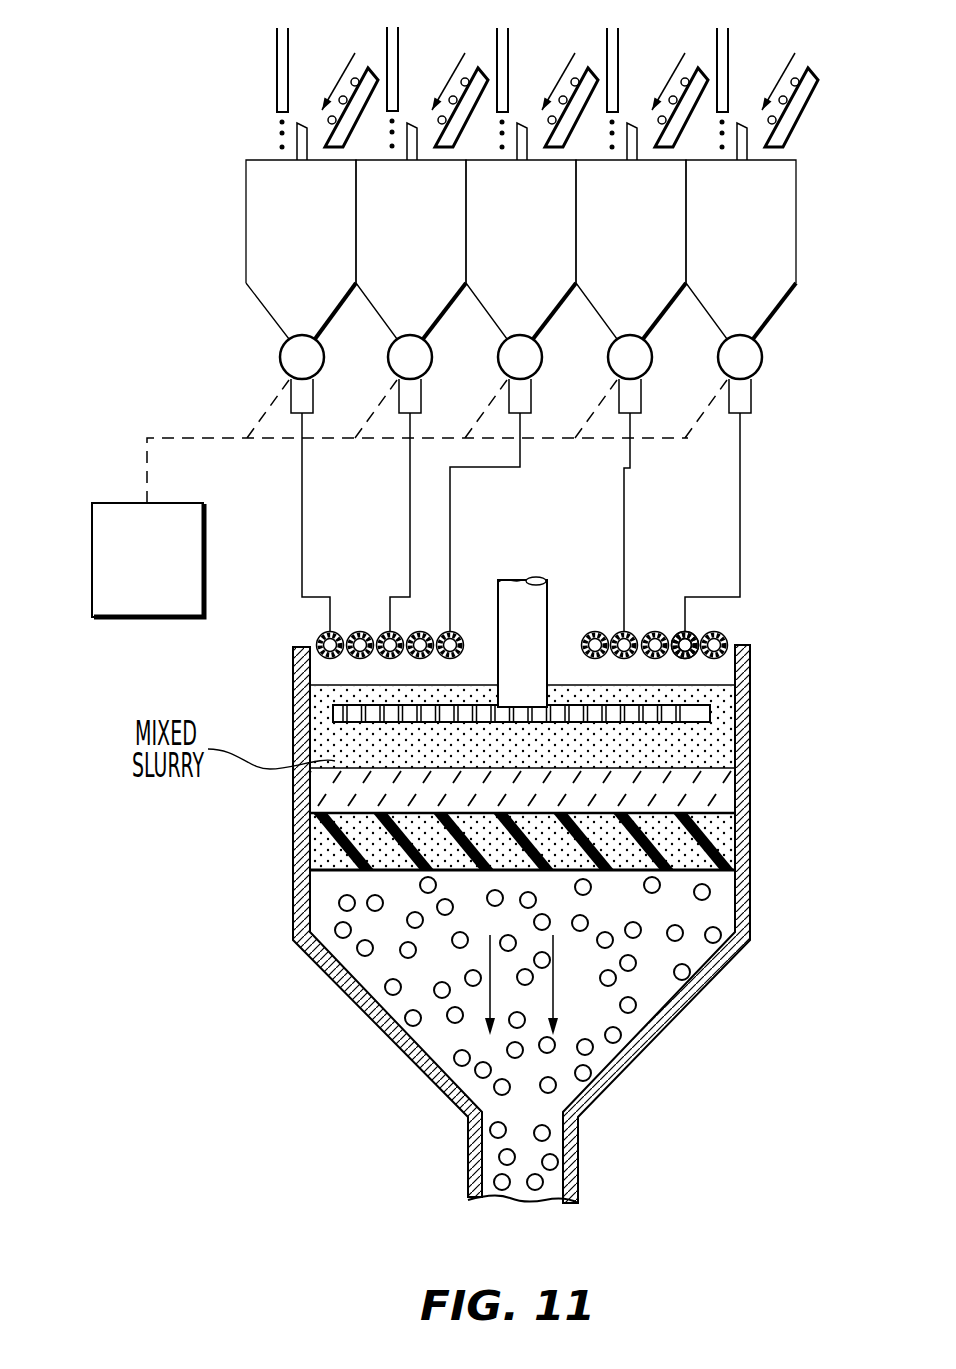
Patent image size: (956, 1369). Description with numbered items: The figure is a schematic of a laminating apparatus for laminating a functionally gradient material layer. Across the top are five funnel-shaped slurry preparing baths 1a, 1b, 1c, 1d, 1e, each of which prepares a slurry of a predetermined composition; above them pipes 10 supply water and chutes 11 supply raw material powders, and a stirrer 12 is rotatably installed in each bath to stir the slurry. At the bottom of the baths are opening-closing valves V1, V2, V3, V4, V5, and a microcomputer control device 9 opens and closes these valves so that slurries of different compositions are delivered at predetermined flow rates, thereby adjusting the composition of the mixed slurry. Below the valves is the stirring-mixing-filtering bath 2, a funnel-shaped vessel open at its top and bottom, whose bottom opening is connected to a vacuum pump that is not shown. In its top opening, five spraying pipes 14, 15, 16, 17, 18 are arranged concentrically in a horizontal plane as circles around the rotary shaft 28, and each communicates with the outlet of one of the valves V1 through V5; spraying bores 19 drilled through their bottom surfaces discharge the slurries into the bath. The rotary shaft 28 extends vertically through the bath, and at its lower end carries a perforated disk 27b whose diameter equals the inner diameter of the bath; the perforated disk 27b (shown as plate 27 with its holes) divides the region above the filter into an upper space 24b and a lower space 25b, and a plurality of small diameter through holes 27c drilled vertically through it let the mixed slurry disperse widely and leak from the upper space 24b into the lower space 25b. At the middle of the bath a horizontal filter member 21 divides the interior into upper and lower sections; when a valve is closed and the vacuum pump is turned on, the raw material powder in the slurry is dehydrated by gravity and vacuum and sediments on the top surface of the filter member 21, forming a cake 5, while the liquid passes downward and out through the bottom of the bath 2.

The pipe 10 is at (278, 68).
The chute 11 is at (376, 78).
The stirrer 12 is at (633, 127).
The slurry preparing bath 1a is at (321, 254).
The slurry preparing bath 1b is at (429, 254).
The slurry preparing bath 1c is at (537, 254).
The slurry preparing bath 1d is at (649, 254).
The slurry preparing bath 1e is at (757, 254).
The opening-closing valve V1 is at (292, 357).
The opening-closing valve V2 is at (402, 357).
The opening-closing valve V3 is at (512, 357).
The opening-closing valve V4 is at (622, 357).
The opening-closing valve V5 is at (732, 357).
The microcomputer control device 9 is at (155, 571).
The spraying pipe 14 is at (320, 633).
The spraying pipe 16 is at (390, 632).
The spraying bore 19 is at (422, 632).
The spraying pipe 18 is at (456, 632).
The spraying pipe 17 is at (598, 632).
The spraying pipe 15 is at (684, 632).
The rotary shaft 28 is at (514, 584).
The upper space 24b is at (333, 688).
The lower space 25b is at (332, 727).
The distribution plate 27 is at (712, 714).
The perforated disk 27b is at (687, 703).
The small diameter through hole 27c is at (660, 722).
The cake 5 is at (334, 802).
The filter member 21 is at (337, 851).
The stirring-mixing-filtering bath 2 is at (757, 823).